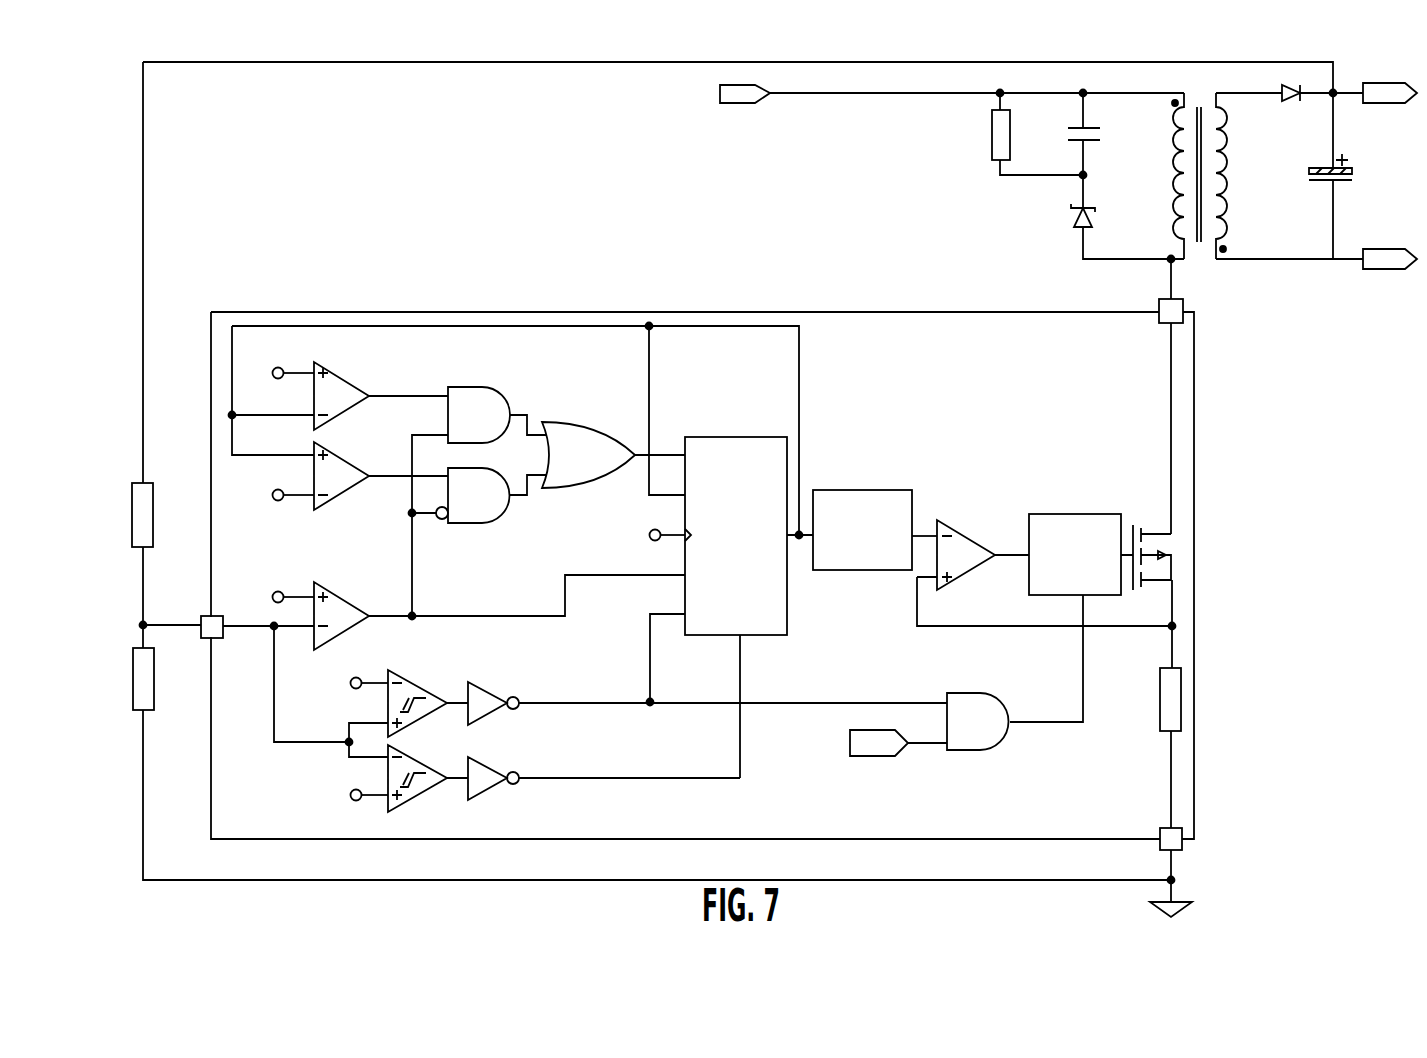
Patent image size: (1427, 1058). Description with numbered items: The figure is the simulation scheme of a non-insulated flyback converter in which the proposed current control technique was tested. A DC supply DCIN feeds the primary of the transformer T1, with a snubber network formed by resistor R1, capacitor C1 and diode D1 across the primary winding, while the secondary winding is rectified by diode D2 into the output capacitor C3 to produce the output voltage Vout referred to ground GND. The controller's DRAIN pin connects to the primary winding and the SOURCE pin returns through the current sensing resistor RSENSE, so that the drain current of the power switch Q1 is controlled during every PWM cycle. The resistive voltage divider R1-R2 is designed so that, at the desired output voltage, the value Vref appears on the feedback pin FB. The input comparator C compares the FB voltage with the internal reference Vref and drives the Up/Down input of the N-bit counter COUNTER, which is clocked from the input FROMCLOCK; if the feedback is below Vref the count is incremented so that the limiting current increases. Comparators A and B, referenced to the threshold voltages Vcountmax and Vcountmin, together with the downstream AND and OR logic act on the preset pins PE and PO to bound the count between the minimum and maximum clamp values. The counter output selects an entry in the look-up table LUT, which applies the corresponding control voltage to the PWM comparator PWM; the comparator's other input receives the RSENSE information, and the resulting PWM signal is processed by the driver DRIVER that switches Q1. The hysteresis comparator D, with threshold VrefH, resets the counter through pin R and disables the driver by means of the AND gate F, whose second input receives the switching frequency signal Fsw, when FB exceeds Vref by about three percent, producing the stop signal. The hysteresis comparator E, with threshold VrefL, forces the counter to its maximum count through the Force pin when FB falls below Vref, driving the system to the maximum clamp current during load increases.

The divider resistor R1 is at (594, 320).
The divider resistor R2 is at (129, 679).
The snubber capacitor C1 is at (1097, 134).
The snubber zener diode D1 is at (1127, 217).
The output rectifier diode D2 is at (1321, 110).
The output capacitor C3 is at (1352, 176).
The transformer T1 is at (1267, 176).
The DC input terminal DCIN is at (952, 109).
The output voltage Vout is at (1390, 80).
The ground terminal GND is at (1390, 275).
The drain terminal DRAIN is at (1136, 396).
The source terminal SOURCE is at (1133, 854).
The feedback pin FB is at (228, 643).
The comparator A is at (381, 396).
The comparator B is at (381, 476).
The input comparator C is at (499, 612).
The hysteresis comparator D is at (667, 699).
The hysteresis comparator E is at (564, 777).
The AND gate F is at (995, 721).
The maximum count voltage Vcountmax is at (307, 358).
The minimum count voltage Vcountmin is at (307, 518).
The reference voltage Vref is at (281, 584).
The high reference voltage VrefH is at (354, 671).
The low reference voltage VrefL is at (354, 814).
The N-bit up/down counter COUNTER is at (731, 480).
The clock input FROMCLOCK is at (615, 537).
The look-up table LUT is at (875, 530).
The PWM comparator PWM is at (1044, 551).
The driver DRIVER is at (1071, 618).
The power MOSFET Q1 is at (1152, 575).
The current sensing resistor RSENSE is at (1137, 727).
The switching frequency signal Fsw is at (879, 743).